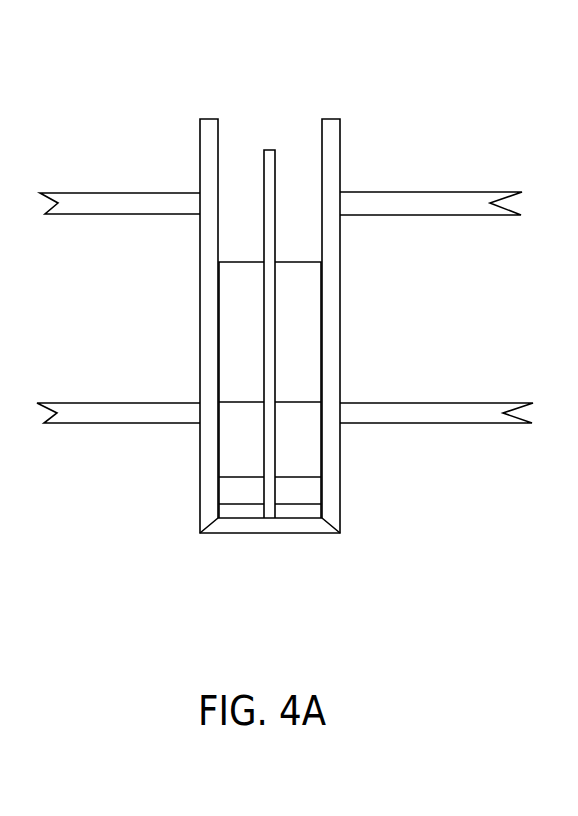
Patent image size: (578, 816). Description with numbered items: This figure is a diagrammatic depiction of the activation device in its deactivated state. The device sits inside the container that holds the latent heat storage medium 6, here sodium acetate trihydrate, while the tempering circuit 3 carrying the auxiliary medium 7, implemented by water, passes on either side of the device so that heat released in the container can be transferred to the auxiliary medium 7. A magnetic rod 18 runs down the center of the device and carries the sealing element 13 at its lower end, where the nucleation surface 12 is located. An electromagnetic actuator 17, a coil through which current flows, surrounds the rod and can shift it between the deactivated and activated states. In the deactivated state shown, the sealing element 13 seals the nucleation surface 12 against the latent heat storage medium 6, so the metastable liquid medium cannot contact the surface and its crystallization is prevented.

The tempering circuit 3 is at (437, 208).
The latent heat storage medium 6 is at (415, 504).
The auxiliary medium 7 is at (99, 341).
The nucleation surface 12 is at (242, 505).
The sealing element 13 is at (310, 527).
The electromagnetic actuator 17 is at (235, 313).
The magnetic rod 18 is at (267, 210).